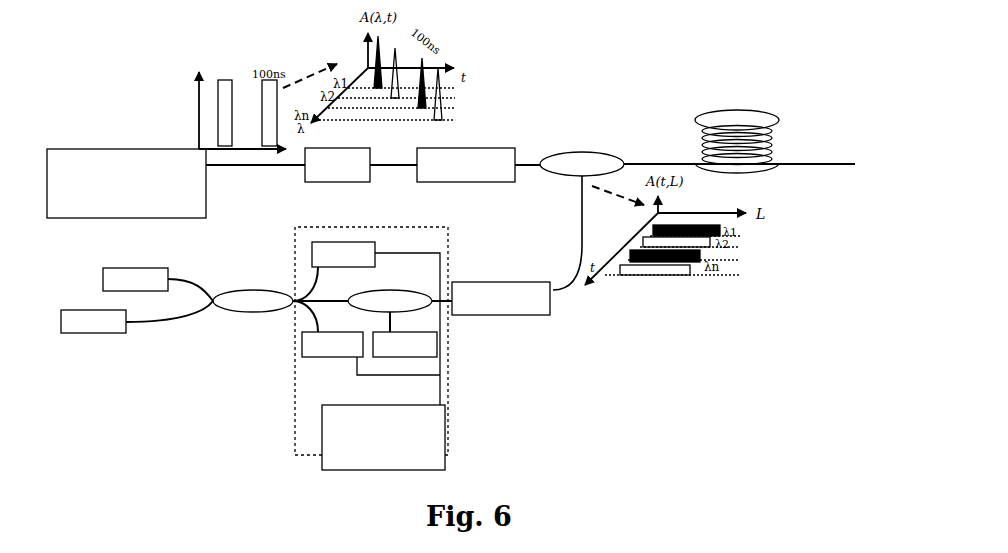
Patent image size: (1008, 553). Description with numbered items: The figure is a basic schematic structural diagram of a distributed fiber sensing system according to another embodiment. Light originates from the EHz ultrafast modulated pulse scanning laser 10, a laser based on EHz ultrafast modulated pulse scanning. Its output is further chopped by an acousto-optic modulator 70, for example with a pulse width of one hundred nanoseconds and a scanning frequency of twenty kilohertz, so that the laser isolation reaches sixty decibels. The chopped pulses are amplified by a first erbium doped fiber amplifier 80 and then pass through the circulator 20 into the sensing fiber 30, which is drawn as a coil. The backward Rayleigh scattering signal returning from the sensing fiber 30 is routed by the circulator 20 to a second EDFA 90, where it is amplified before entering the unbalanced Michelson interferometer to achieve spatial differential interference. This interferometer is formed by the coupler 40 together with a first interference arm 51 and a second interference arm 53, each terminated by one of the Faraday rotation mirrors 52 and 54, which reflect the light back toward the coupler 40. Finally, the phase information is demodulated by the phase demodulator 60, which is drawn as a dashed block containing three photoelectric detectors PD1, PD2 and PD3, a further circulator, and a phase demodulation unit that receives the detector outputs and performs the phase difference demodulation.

The EHz ultrafast modulated pulse scanning laser 10 is at (104, 148).
The circulator 20 is at (583, 152).
The sensing fiber 30 is at (825, 162).
The coupler 40 is at (240, 290).
The first interference arm 51 is at (169, 322).
The Faraday rotation mirror 52 is at (90, 333).
The second interference arm 53 is at (185, 278).
The Faraday rotation mirror 54 is at (138, 268).
The phase demodulator 60 is at (449, 372).
The acousto-optic modulator 70 is at (336, 182).
The first erbium doped fiber amplifier 80 is at (458, 182).
The second EDFA 90 is at (498, 282).